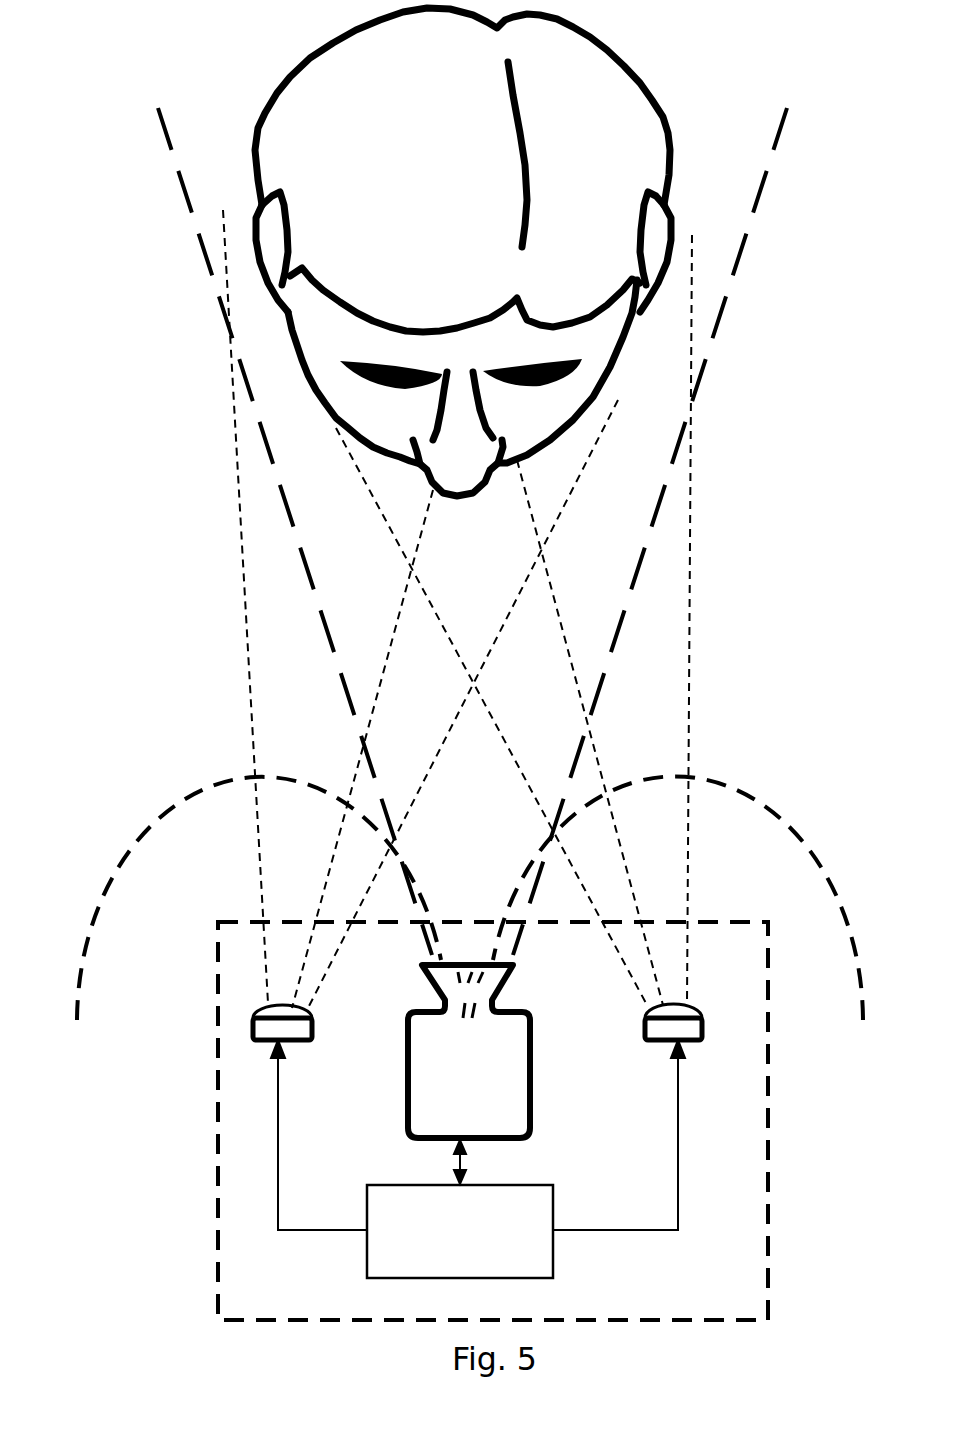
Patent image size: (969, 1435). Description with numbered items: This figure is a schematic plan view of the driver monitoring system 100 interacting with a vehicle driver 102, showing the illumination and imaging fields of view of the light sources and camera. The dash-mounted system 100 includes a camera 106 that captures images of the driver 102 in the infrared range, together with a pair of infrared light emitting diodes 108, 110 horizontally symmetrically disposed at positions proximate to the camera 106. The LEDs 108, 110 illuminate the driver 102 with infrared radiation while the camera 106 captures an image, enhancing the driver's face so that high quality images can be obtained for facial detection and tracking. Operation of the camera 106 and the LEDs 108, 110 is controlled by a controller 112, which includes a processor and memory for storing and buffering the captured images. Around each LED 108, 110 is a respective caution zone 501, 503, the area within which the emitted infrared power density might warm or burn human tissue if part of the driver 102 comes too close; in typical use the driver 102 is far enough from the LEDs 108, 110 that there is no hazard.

The driver monitoring system 100 is at (776, 1125).
The vehicle driver 102 is at (681, 97).
The camera 106 is at (513, 1053).
The light emitting diode 108 is at (673, 1025).
The light emitting diode 110 is at (263, 1033).
The controller 112 is at (522, 1183).
The caution zone 501 is at (779, 820).
The caution zone 503 is at (193, 796).